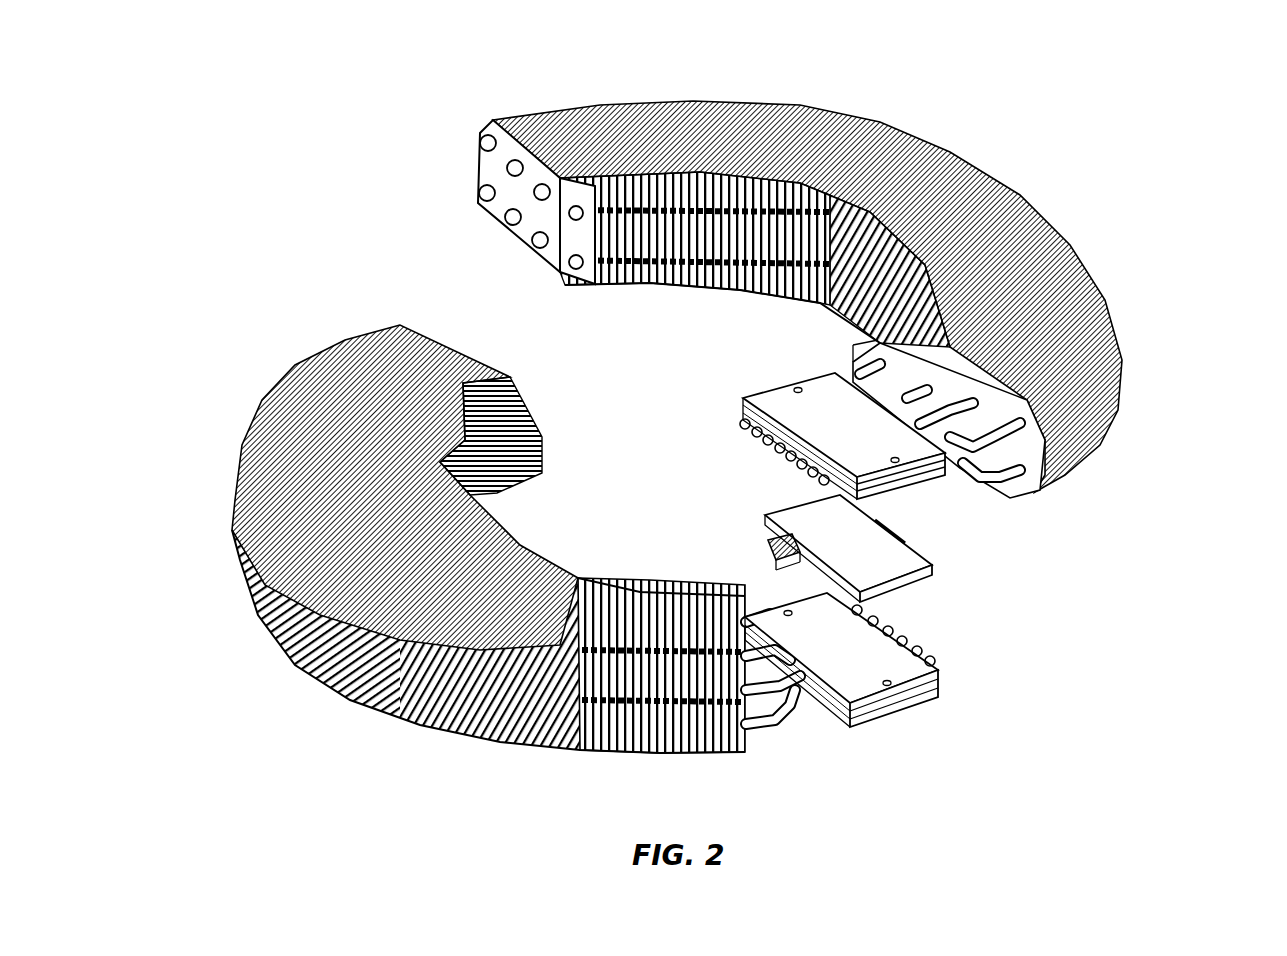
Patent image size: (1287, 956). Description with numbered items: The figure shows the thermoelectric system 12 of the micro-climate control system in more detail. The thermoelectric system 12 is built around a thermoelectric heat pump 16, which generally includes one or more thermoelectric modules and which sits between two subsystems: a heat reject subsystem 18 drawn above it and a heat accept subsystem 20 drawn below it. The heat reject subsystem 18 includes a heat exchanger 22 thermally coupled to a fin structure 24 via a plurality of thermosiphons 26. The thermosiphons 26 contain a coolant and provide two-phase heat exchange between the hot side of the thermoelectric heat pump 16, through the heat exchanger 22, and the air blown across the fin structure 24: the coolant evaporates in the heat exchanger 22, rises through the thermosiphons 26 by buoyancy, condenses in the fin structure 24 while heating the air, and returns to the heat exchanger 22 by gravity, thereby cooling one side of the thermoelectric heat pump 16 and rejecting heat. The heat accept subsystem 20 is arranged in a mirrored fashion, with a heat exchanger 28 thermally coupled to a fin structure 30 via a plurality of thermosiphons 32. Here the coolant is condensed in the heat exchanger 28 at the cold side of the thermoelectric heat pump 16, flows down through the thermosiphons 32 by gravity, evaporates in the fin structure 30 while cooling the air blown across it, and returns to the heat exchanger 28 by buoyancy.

The thermoelectric system 12 is at (1198, 131).
The thermoelectric heat pump 16 is at (936, 557).
The heat reject subsystem 18 is at (844, 306).
The heat accept subsystem 20 is at (583, 558).
The heat exchanger 22 is at (741, 396).
The fin structure 24 is at (948, 152).
The thermosiphons 26 is at (1000, 480).
The heat exchanger 28 is at (943, 661).
The fin structure 30 is at (347, 681).
The thermosiphons 32 is at (790, 737).